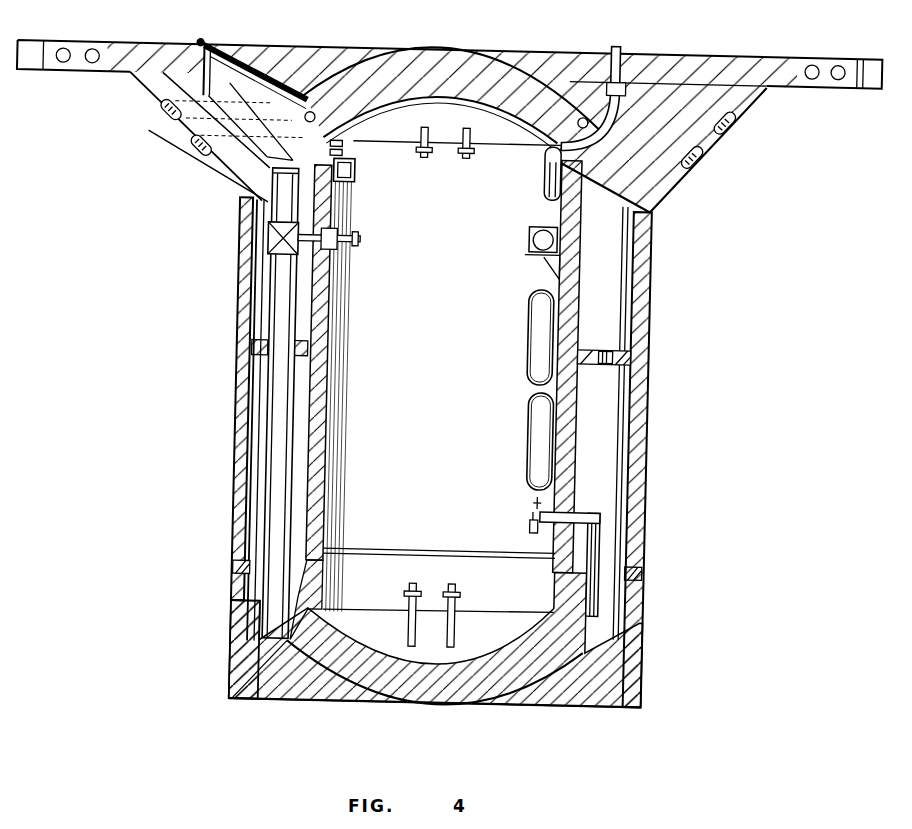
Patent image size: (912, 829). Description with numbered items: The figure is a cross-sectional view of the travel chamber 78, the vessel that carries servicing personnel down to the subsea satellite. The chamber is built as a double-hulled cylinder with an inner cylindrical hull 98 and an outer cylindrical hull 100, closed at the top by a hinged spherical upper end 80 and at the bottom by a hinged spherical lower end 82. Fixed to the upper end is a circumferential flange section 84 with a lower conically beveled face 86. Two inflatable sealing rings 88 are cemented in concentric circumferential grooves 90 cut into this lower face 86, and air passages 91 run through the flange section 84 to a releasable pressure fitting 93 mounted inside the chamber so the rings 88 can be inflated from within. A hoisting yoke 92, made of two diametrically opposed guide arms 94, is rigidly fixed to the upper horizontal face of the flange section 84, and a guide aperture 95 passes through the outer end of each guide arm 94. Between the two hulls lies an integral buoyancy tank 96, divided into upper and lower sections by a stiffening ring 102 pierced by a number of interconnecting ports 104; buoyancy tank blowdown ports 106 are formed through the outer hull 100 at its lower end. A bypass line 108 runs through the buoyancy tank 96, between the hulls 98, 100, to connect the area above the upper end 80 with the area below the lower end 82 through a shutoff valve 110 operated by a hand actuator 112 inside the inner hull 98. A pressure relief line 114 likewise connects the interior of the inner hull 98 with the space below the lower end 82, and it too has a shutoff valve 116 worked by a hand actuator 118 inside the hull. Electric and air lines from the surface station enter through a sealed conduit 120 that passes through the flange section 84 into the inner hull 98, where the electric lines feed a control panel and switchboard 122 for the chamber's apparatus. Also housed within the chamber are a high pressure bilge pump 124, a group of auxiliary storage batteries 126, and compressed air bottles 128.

The travel chamber 78 is at (658, 265).
The upper end 80 is at (390, 62).
The lower end 82 is at (428, 702).
The flange section 84 is at (748, 107).
The lower conically beveled face 86 is at (664, 194).
The inflatable sealing rings 88 is at (697, 160).
The concentric circumferential grooves 90 is at (196, 133).
The air passages 91 is at (283, 70).
The hoisting yoke 92 is at (205, 38).
The releasable pressure fitting 93 is at (345, 153).
The guide arms 94 is at (32, 42).
The guide aperture 95 is at (42, 70).
The integral buoyancy tank 96 is at (258, 485).
The inner cylindrical hull 98 is at (305, 517).
The outer cylindrical hull 100 is at (240, 410).
The stiffening ring 102 is at (621, 352).
The interconnecting ports 104 is at (607, 366).
The buoyancy tank blowdown ports 106 is at (233, 567).
The bypass line 108 is at (268, 302).
The shutoff valve 110 is at (268, 238).
The hand actuator 112 is at (359, 240).
The pressure relief line 114 is at (602, 554).
The shutoff valve 116 is at (533, 520).
The hand actuator 118 is at (536, 505).
The sealed conduit 120 is at (605, 83).
The control panel and switchboard 122 is at (540, 198).
The high pressure bilge pump 124 is at (535, 240).
The auxiliary storage batteries 126 is at (348, 172).
The compressed air bottles 128 is at (538, 404).